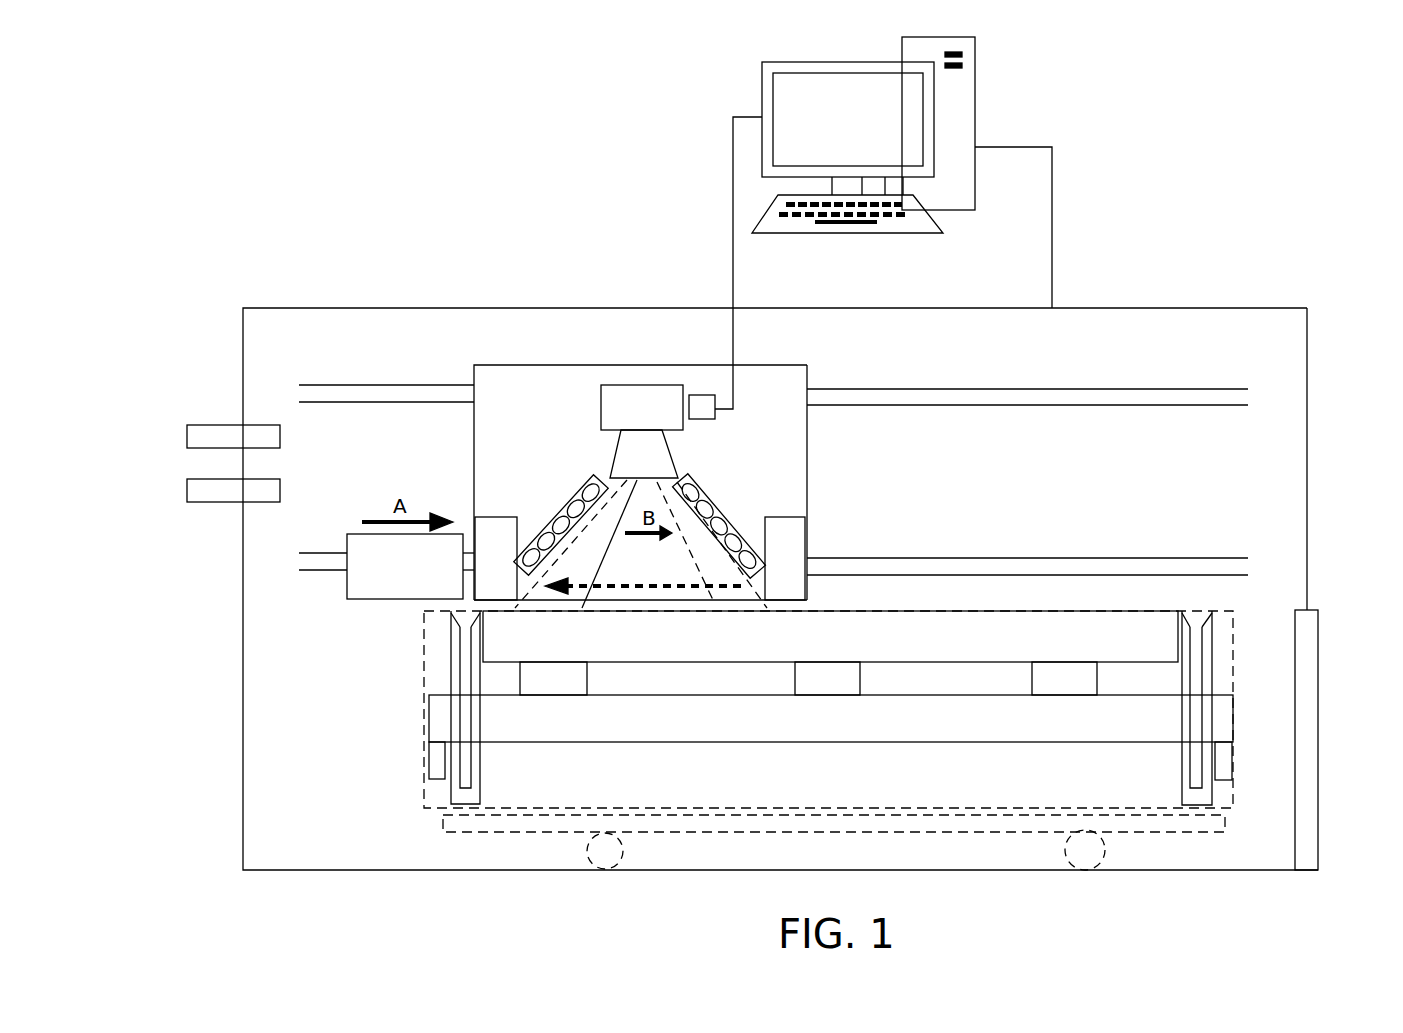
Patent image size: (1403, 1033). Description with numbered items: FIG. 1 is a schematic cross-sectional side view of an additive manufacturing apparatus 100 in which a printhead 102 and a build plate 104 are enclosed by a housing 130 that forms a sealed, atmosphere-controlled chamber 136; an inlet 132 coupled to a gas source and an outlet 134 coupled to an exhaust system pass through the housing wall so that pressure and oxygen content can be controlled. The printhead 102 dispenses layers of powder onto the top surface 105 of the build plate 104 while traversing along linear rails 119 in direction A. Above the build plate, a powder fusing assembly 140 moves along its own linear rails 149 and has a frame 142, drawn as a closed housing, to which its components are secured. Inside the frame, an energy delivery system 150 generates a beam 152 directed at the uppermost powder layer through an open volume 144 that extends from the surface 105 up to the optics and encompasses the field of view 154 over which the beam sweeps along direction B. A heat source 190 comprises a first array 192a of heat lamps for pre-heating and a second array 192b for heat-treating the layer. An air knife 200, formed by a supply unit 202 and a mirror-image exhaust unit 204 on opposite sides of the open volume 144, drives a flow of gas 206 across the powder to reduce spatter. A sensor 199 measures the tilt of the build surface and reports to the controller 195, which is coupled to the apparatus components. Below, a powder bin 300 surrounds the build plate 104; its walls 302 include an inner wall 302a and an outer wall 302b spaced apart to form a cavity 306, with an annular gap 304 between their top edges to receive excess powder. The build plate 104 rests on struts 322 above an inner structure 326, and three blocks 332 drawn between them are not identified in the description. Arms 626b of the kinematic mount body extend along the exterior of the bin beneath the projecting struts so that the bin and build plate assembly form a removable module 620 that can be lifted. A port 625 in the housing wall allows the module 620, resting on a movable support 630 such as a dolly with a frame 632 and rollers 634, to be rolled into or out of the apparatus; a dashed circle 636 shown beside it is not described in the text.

The additive manufacturing apparatus 100 is at (260, 239).
The housing 130 is at (388, 307).
The inlet 132 is at (205, 437).
The outlet 134 is at (203, 493).
The controller 195 is at (963, 105).
The powder fusing assembly 140 is at (458, 442).
The frame 142 is at (807, 455).
The linear rails 149 is at (1027, 398).
The linear rails 119 is at (1115, 570).
The sealed chamber 136 is at (983, 495).
The printhead 102 is at (424, 577).
The energy delivery system 150 is at (588, 402).
The sensor 199 is at (699, 393).
The exhaust unit 204 is at (497, 530).
The supply unit 202 is at (788, 530).
The air knife 200 is at (822, 545).
The heat source 190 is at (653, 499).
The first array of heat lamps 192a is at (698, 488).
The second array of heat lamps 192b is at (589, 490).
The beam 152 is at (600, 570).
The field of view 154 is at (713, 600).
The open volume 144 is at (670, 571).
The flow of gas 206 is at (677, 590).
The build plate 104 is at (848, 648).
The top surface 105 is at (1020, 608).
The support blocks 332 is at (571, 691).
The inner structure 326 is at (848, 728).
The supports 322 is at (442, 722).
The powder bin 300 is at (816, 712).
The walls 302 is at (733, 708).
The annular inner wall 302a is at (477, 693).
The annular outer wall 302b is at (453, 669).
The annular gap 304 is at (463, 618).
The cavity 306 is at (468, 653).
The arms 626b is at (1327, 696).
The removable module 620 is at (1237, 667).
The port 625 is at (1307, 787).
The movable support 630 is at (825, 877).
The frame 632 is at (577, 830).
The rollers 634 is at (600, 857).
The roller 636 is at (1082, 862).